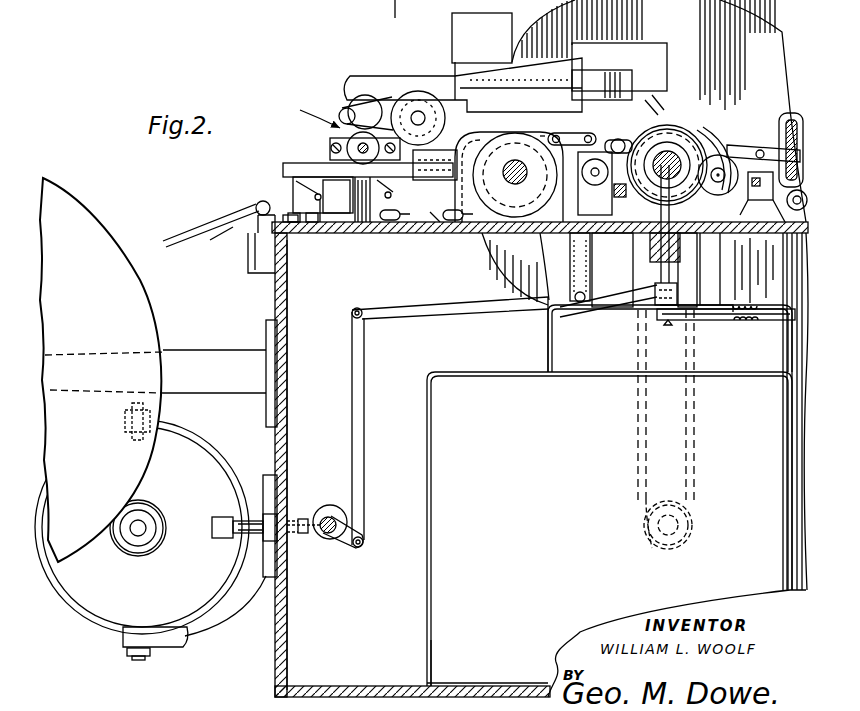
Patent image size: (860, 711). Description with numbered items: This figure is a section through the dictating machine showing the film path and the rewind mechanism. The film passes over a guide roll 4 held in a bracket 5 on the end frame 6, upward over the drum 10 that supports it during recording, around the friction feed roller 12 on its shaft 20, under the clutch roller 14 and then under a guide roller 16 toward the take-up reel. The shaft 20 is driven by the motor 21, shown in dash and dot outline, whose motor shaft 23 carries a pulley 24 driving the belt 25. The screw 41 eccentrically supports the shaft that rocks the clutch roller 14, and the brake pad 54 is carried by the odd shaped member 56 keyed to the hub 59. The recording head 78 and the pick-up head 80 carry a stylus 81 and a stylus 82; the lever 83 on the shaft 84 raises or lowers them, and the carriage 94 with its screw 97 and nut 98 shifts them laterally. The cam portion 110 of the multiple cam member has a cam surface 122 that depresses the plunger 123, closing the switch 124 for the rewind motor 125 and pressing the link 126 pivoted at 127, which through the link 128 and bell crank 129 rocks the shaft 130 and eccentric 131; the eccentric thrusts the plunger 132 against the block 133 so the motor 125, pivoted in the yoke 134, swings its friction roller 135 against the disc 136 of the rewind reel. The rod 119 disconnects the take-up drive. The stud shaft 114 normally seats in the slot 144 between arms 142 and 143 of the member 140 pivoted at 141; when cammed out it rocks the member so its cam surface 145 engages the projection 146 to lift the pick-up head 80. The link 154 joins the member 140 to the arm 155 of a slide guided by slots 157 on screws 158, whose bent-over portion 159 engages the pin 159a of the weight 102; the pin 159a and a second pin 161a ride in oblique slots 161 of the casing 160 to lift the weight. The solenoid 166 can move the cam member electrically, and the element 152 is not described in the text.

The guide roll 4 is at (236, 229).
The bracket 5 is at (249, 254).
The end frame 6 is at (276, 295).
The drum 10 is at (513, 233).
The friction feed roller 12 is at (647, 270).
The clutch roller 14 is at (735, 148).
The guide roller 16 is at (790, 240).
The shaft 20 is at (660, 150).
The motor 21 is at (430, 573).
The motor shaft 23 is at (650, 547).
The pulley 24 is at (643, 533).
The belt 25 is at (695, 447).
The screw 41 is at (712, 233).
The brake pad 54 is at (752, 233).
The odd shaped member 56 is at (793, 192).
The hub 59 is at (746, 158).
The recording head 78 is at (453, 38).
The pick-up head 80 is at (668, 42).
The stylus 81 is at (506, 112).
The stylus 82 is at (662, 105).
The lever 83 is at (340, 126).
The shaft 84 is at (415, 115).
The carriage 94 is at (300, 116).
The screw 97 is at (347, 148).
The nut 98 is at (333, 164).
The weight 102 is at (288, 193).
The cam portion 110 is at (612, 270).
The stud shaft 114 is at (616, 140).
The rod 119 is at (548, 242).
The cam surface 122 is at (672, 162).
The plunger 123 is at (678, 285).
The switch 124 is at (676, 322).
The rewind motor 125 is at (80, 605).
The link 126 is at (622, 303).
The pivot 127 is at (580, 305).
The link 128 is at (364, 355).
The bell crank 129 is at (347, 545).
The shaft 130 is at (325, 535).
The eccentric 131 is at (323, 505).
The plunger 132 is at (302, 518).
The block 133 is at (221, 540).
The yoke 134 is at (190, 640).
The friction roller 135 is at (143, 556).
The disc 136 is at (160, 326).
The member 140 is at (593, 174).
The pivot 141 is at (588, 196).
The arm 142 is at (649, 143).
The arm 143 is at (615, 193).
The slot 144 is at (568, 146).
The cam surface 145 is at (575, 130).
The projection 146 is at (595, 45).
The pulley 152 is at (706, 140).
The link 154 is at (553, 64).
The arm 155 is at (505, 132).
The slots 157 is at (413, 230).
The screws 158 is at (389, 230).
The bent-over portion 159 is at (357, 230).
The pin 159a is at (432, 230).
The casing 160 is at (340, 230).
The oblique slots 161 is at (296, 185).
The pin 161a is at (333, 228).
The solenoid 166 is at (800, 113).